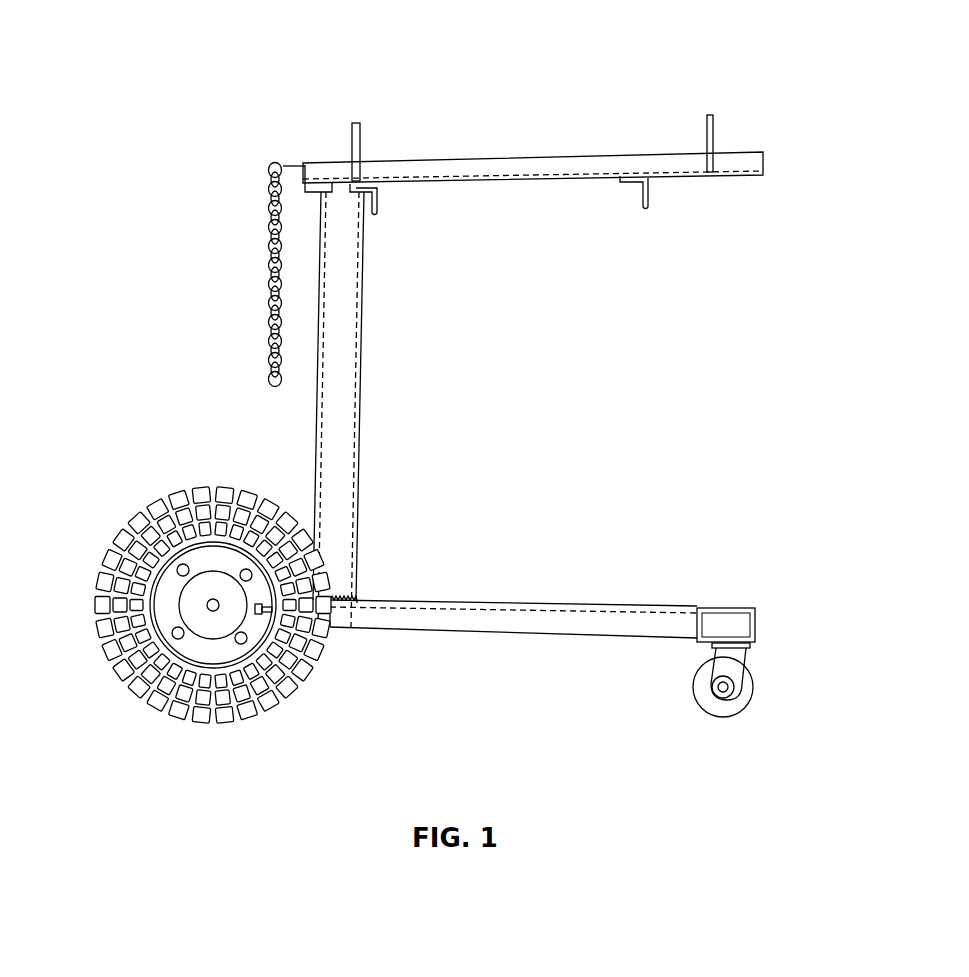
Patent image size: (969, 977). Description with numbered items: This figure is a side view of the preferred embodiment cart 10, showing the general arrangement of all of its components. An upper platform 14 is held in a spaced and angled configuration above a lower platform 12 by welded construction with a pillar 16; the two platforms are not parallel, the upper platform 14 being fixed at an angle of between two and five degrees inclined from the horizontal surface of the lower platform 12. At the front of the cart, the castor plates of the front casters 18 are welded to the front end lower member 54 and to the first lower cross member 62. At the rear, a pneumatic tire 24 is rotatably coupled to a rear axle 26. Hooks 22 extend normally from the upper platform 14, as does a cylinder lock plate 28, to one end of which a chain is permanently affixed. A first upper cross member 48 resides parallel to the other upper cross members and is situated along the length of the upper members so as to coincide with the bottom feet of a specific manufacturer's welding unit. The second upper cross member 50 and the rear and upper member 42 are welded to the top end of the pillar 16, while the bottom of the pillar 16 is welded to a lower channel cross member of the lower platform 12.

The cart 10 is at (208, 322).
The lower platform 12 is at (626, 605).
The upper platform 14 is at (748, 177).
The pillar 16 is at (358, 403).
The front casters 18 is at (737, 658).
The hooks 22 is at (713, 125).
The pneumatic tire 24 is at (273, 705).
The rear axle 26 is at (213, 605).
The cylinder lock plate 28 is at (293, 163).
The rear and upper member 42 is at (310, 165).
The first upper cross member 48 is at (648, 197).
The second upper cross member 50 is at (377, 190).
The front end lower member 54 is at (765, 610).
The first lower cross member 62 is at (693, 607).